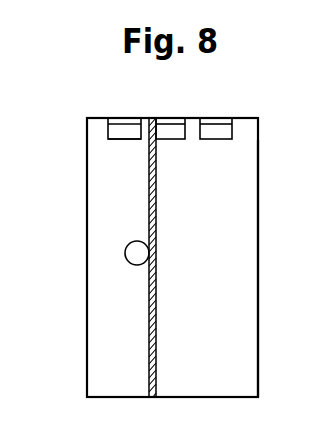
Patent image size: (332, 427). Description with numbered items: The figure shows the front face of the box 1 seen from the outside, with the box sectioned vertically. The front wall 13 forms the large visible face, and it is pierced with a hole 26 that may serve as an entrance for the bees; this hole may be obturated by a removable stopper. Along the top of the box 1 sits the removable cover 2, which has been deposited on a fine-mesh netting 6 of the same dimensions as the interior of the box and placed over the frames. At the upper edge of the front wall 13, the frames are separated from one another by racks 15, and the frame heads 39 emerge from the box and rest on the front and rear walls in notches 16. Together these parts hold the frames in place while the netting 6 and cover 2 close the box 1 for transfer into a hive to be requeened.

The box 1 is at (80, 310).
The removable cover 2 is at (122, 119).
The fine-mesh netting 6 is at (169, 118).
The front wall 13 is at (230, 352).
The racks 15 is at (192, 118).
The notches 16 is at (229, 131).
The hole 26 is at (137, 241).
The frame heads 39 is at (122, 130).